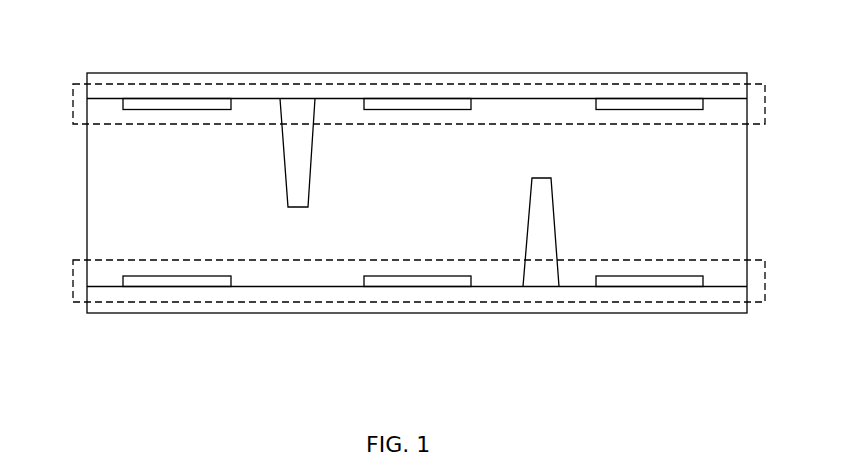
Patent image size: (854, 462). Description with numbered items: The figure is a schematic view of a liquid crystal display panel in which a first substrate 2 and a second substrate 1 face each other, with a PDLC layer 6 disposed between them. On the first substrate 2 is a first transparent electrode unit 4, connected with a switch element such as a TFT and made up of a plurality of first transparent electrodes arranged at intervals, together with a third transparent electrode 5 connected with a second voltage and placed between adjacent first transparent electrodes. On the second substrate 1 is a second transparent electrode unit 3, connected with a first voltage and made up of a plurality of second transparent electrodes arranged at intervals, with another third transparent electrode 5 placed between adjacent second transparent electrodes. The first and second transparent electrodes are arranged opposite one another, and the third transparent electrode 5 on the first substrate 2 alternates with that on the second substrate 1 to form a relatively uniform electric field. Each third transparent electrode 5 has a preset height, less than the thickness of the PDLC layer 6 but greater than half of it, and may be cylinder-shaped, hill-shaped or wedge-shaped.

The second substrate 1 is at (328, 78).
The first substrate 2 is at (115, 307).
The second transparent electrode unit 3 is at (78, 110).
The first transparent electrode unit 4 is at (78, 268).
The third transparent electrode 5 is at (302, 170).
The PDLC layer 6 is at (97, 199).